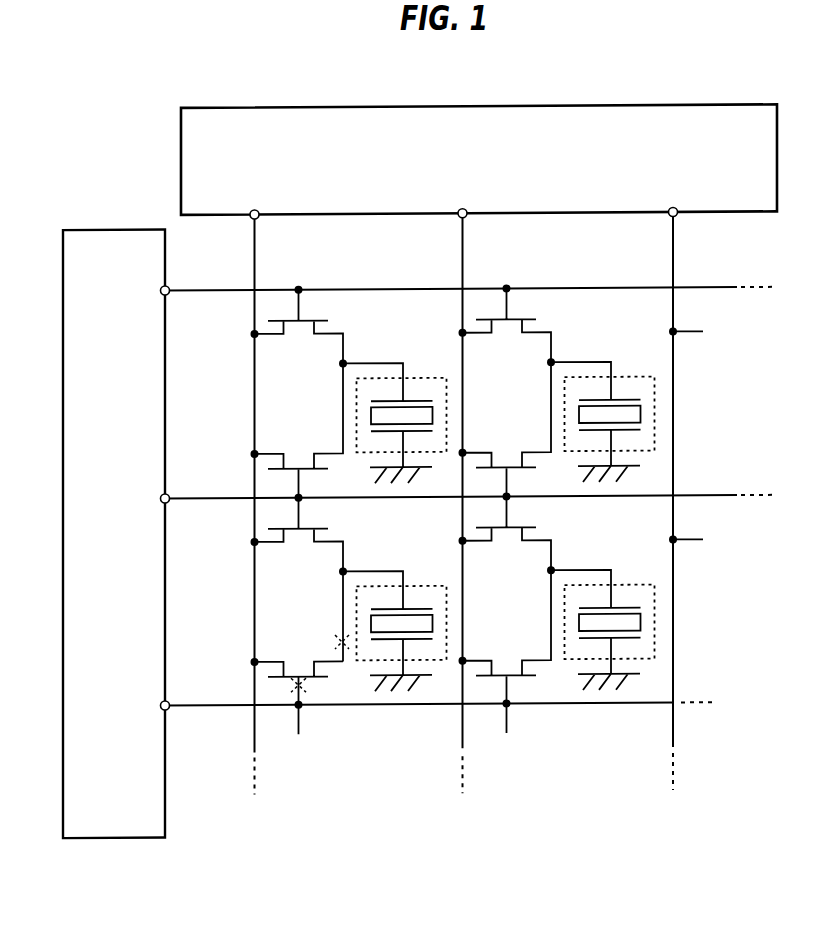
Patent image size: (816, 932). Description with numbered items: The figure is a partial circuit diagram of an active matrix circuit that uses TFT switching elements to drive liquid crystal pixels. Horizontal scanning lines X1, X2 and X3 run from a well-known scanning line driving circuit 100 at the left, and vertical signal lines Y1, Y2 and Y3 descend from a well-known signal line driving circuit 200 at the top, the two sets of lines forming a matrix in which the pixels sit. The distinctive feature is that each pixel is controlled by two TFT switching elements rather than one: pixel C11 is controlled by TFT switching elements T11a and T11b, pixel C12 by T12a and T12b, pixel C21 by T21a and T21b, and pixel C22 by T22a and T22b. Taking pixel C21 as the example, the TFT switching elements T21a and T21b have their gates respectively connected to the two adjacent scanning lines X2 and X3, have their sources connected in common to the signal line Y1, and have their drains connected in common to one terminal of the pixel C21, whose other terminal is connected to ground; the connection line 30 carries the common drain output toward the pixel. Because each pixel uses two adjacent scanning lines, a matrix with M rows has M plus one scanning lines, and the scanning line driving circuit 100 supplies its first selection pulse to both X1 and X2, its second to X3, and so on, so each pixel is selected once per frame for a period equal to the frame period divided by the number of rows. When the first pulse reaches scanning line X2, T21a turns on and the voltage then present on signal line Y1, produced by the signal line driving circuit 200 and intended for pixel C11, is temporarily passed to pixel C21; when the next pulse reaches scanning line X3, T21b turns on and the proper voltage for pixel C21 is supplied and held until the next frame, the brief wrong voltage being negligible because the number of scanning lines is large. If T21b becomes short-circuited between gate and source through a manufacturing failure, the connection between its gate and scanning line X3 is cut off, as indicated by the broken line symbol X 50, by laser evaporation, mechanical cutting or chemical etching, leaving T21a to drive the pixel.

The scanning line driving circuit 100 is at (118, 229).
The signal line driving circuit 200 is at (180, 182).
The connection wiring between transistor and capacitor 30 is at (340, 643).
The broken line symbol X 50 is at (297, 688).
The scanning line X1 is at (225, 292).
The scanning line X2 is at (223, 501).
The scanning line X3 is at (225, 708).
The signal line Y1 is at (255, 273).
The signal line Y2 is at (463, 272).
The signal line Y3 is at (674, 270).
The TFT switching element T11a is at (332, 325).
The TFT switching element T11b is at (327, 462).
The TFT switching element T12a is at (533, 328).
The TFT switching element T12b is at (532, 464).
The TFT switching element T21a is at (330, 533).
The TFT switching element T21b is at (322, 669).
The TFT switching element T22a is at (533, 537).
The TFT switching element T22b is at (532, 670).
The liquid crystal pixel C11 is at (420, 380).
The liquid crystal pixel C12 is at (625, 378).
The liquid crystal pixel C21 is at (427, 588).
The liquid crystal pixel C22 is at (627, 589).